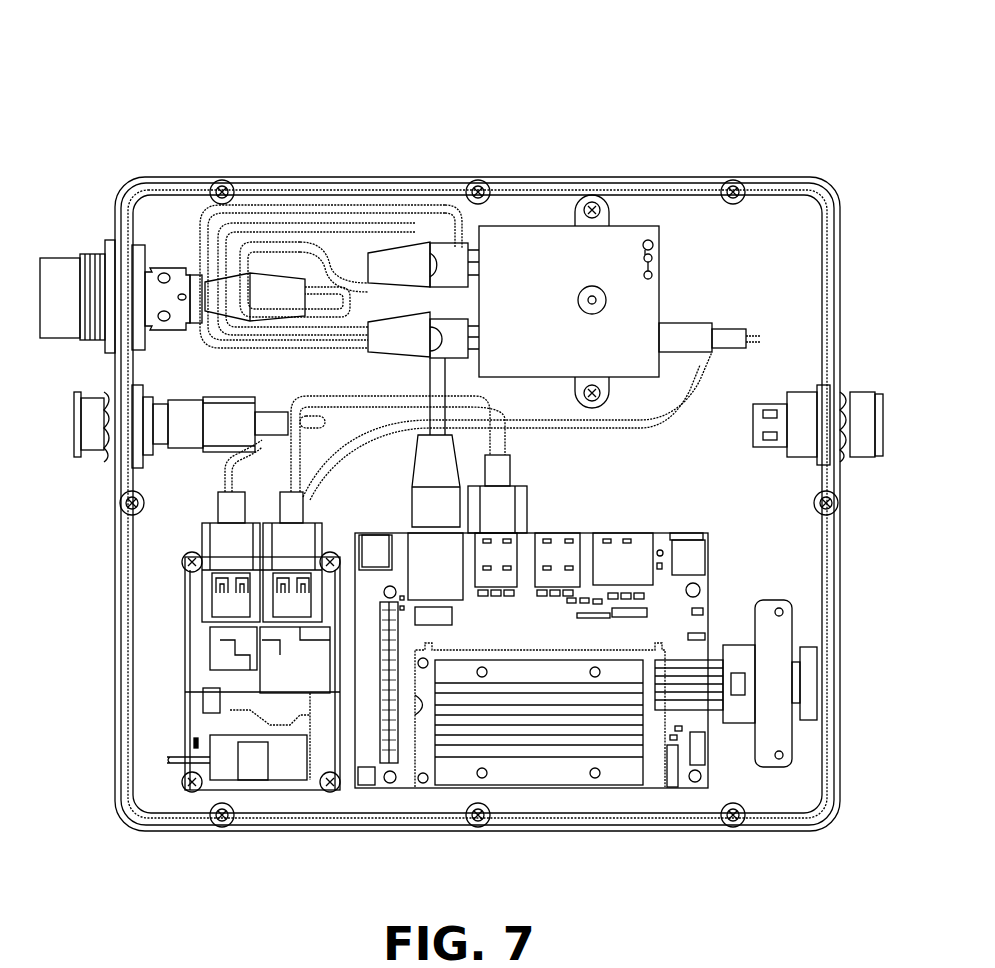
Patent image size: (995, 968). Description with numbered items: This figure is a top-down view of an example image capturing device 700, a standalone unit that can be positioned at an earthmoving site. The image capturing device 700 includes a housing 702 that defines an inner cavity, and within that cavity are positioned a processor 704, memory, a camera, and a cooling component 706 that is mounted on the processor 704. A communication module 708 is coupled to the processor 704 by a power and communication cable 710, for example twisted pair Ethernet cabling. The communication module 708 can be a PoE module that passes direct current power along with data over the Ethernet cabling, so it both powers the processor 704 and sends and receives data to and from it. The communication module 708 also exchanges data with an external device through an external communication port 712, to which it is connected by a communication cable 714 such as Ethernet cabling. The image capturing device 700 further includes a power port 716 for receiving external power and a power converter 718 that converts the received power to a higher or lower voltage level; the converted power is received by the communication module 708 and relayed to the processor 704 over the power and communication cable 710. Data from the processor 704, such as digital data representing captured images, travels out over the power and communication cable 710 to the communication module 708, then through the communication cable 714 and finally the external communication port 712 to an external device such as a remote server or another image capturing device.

The image capturing device 700 is at (103, 42).
The housing 702 is at (205, 188).
The processor 704 is at (660, 765).
The cooling component 706 is at (530, 730).
The communication module 708 is at (640, 225).
The power and communication cable 710 is at (397, 212).
The external communication port 712 is at (52, 258).
The communication cable 714 is at (298, 245).
The power port 716 is at (92, 427).
The power converter 718 is at (200, 727).